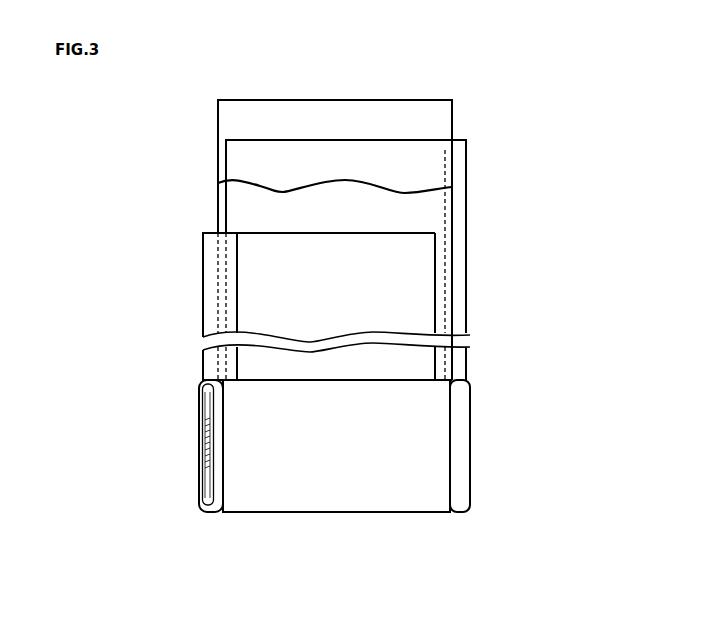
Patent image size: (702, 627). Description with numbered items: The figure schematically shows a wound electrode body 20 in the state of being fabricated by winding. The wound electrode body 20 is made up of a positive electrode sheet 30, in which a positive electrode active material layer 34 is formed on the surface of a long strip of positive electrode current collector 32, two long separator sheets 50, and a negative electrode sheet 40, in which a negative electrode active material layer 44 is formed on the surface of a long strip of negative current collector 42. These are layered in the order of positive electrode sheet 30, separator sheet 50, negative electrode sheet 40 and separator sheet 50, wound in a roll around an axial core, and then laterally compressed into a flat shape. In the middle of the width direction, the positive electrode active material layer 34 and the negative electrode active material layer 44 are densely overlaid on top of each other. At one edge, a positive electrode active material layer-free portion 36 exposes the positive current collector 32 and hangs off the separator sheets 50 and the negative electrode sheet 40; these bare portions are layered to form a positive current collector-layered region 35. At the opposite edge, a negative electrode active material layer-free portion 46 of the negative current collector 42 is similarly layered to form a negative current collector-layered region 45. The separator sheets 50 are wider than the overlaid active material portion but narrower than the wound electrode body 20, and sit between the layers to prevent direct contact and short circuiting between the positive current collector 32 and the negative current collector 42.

The wound electrode body 20 is at (275, 495).
The positive electrode sheet 30 is at (287, 306).
The positive electrode current collector 32 is at (200, 245).
The positive electrode active material layer 34 is at (245, 315).
The positive current collector-layered region 35 is at (203, 425).
The positive electrode active material layer-free portion 36 is at (212, 292).
The negative electrode sheet 40 is at (390, 258).
The negative current collector 42 is at (466, 186).
The negative electrode active material layer 44 is at (440, 156).
The negative current collector-layered region 45 is at (460, 428).
The negative electrode active material layer-free portion 46 is at (455, 233).
The separator sheet 50 is at (233, 115).